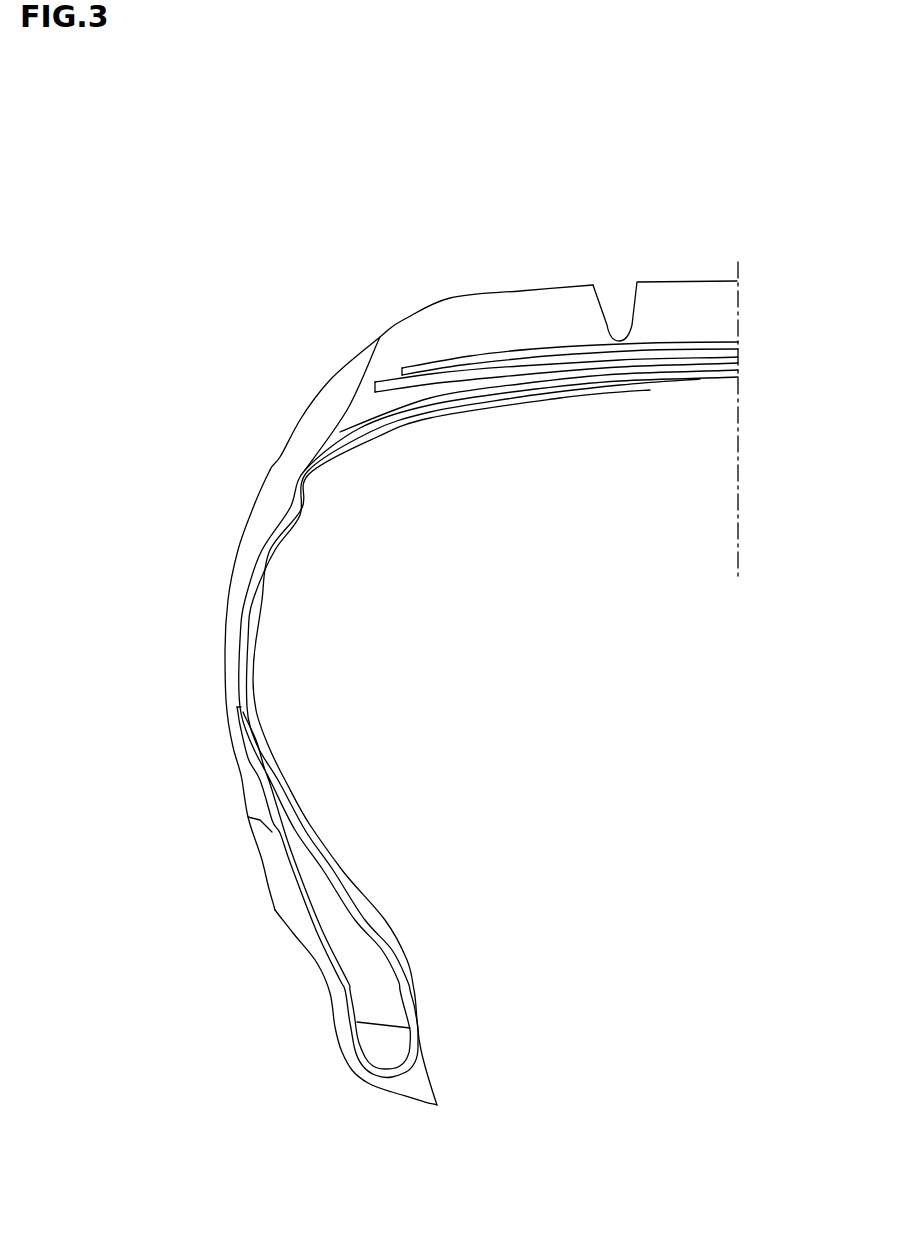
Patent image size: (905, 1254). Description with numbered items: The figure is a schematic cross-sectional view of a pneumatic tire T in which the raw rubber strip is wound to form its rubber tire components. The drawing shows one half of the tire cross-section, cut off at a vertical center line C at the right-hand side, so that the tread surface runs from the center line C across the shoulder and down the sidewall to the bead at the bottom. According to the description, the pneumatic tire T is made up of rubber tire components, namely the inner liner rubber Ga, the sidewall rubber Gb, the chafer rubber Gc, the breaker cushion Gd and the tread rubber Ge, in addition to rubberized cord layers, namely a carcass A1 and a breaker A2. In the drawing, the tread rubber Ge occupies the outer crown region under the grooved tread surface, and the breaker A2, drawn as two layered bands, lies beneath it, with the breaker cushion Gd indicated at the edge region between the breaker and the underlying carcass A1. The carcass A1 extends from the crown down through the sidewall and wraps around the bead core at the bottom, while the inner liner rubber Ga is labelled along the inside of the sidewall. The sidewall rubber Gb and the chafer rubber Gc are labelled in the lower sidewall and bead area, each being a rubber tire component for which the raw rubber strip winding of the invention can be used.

The pneumatic tire T is at (296, 283).
The tire equator (center line) C is at (738, 408).
The tread rubber Ge is at (515, 312).
The breaker cushion Gd is at (378, 407).
The inner liner rubber Ga is at (298, 508).
The sidewall rubber Gb is at (250, 795).
The chafer rubber Gc is at (278, 877).
The breaker A2 is at (536, 357).
The carcass A1 is at (680, 367).